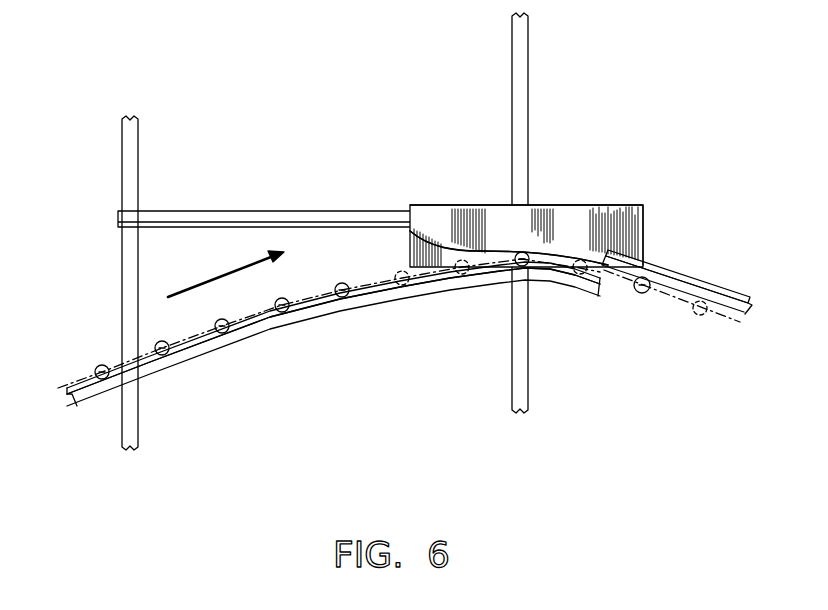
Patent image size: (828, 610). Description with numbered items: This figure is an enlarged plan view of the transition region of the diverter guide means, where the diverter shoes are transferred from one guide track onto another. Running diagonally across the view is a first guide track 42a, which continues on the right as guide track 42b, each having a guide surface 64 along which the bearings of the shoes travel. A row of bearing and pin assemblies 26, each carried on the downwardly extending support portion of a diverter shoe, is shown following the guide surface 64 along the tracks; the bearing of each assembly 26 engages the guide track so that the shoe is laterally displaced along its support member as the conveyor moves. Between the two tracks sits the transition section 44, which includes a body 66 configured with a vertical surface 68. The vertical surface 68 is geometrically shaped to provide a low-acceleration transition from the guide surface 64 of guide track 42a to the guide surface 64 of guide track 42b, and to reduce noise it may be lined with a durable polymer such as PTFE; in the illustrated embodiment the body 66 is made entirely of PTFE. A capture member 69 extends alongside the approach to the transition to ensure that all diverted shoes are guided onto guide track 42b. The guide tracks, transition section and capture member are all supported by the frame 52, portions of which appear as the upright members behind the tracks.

The bearing and pin assembly 26 is at (102, 362).
The guide track 42a is at (298, 325).
The guide track 42b is at (672, 270).
The transition section 44 is at (587, 205).
The frame 52 is at (138, 168).
The guide surface 64 is at (260, 323).
The body 66 is at (488, 205).
The vertical surface 68 is at (412, 245).
The capture member 69 is at (220, 211).